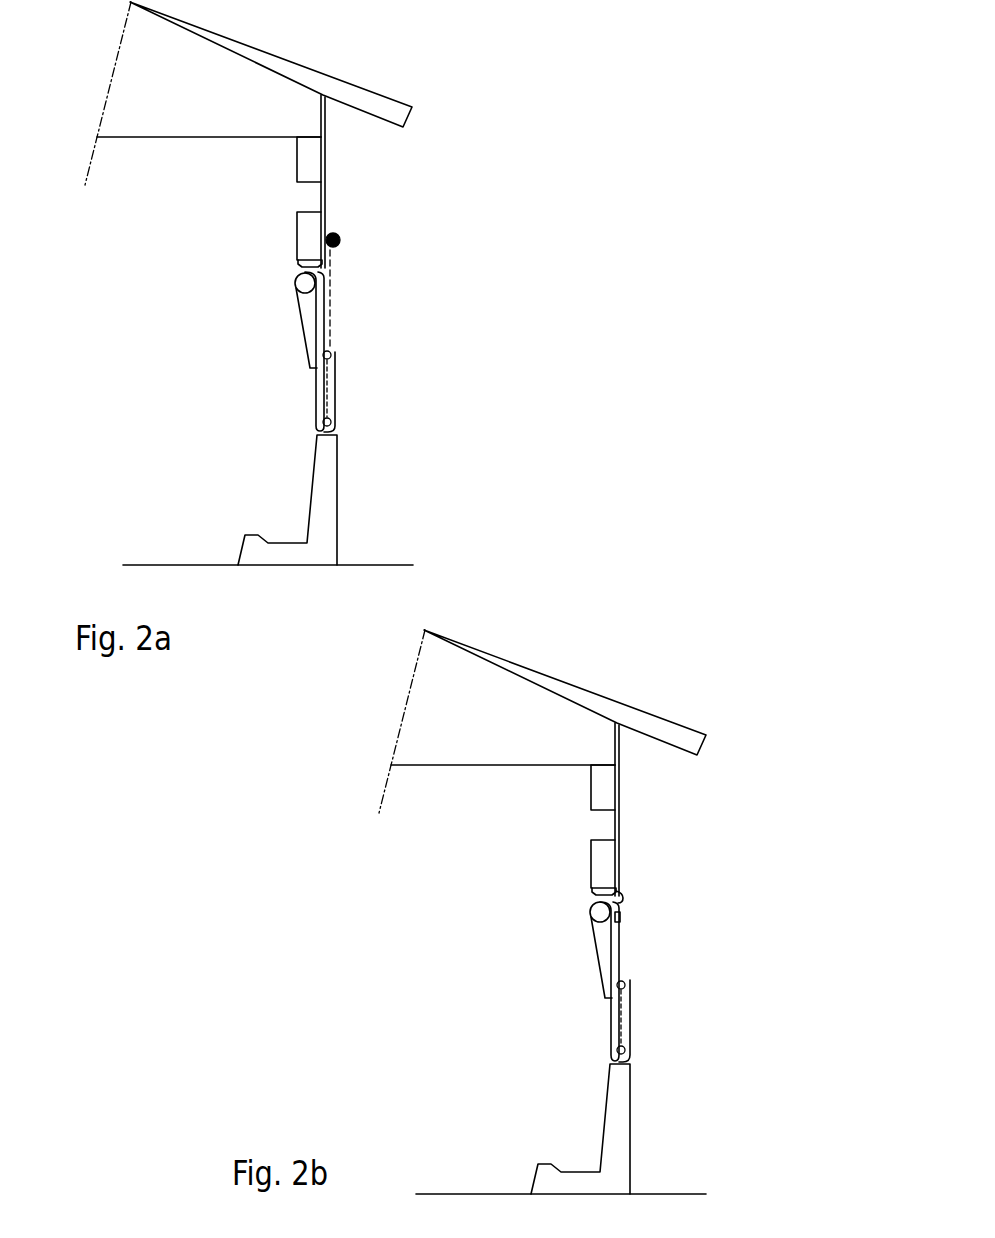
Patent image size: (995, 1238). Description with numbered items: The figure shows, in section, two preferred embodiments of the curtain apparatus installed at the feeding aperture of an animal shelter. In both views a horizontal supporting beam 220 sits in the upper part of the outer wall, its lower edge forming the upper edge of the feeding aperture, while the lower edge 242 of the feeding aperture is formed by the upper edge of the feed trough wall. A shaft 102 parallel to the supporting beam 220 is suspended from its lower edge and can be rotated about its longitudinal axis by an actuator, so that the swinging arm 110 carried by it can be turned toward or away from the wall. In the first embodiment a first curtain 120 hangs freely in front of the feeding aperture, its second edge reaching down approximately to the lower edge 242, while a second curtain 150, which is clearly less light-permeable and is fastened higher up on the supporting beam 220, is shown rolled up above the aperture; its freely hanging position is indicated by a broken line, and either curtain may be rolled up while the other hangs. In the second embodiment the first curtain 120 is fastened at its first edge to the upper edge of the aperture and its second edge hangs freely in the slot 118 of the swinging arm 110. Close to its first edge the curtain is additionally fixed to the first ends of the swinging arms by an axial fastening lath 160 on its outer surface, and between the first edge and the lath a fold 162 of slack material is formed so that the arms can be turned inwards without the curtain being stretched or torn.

In FIG. 2a, the supporting beam 220 is at (212, 210).
In FIG. 2a, the second curtain 150 is at (488, 220).
In FIG. 2a, the first curtain 120 is at (196, 340).
In FIG. 2b, the first curtain 120 is at (717, 981).
In FIG. 2a, the lower edge of the feeding aperture 242 is at (198, 390).
In FIG. 2b, the shaft 102 is at (463, 889).
In FIG. 2b, the swinging arm 110 is at (466, 957).
In FIG. 2b, the fold 162 is at (725, 866).
In FIG. 2b, the fastening lath 160 is at (724, 898).
In FIG. 2b, the slot 118 is at (725, 1021).